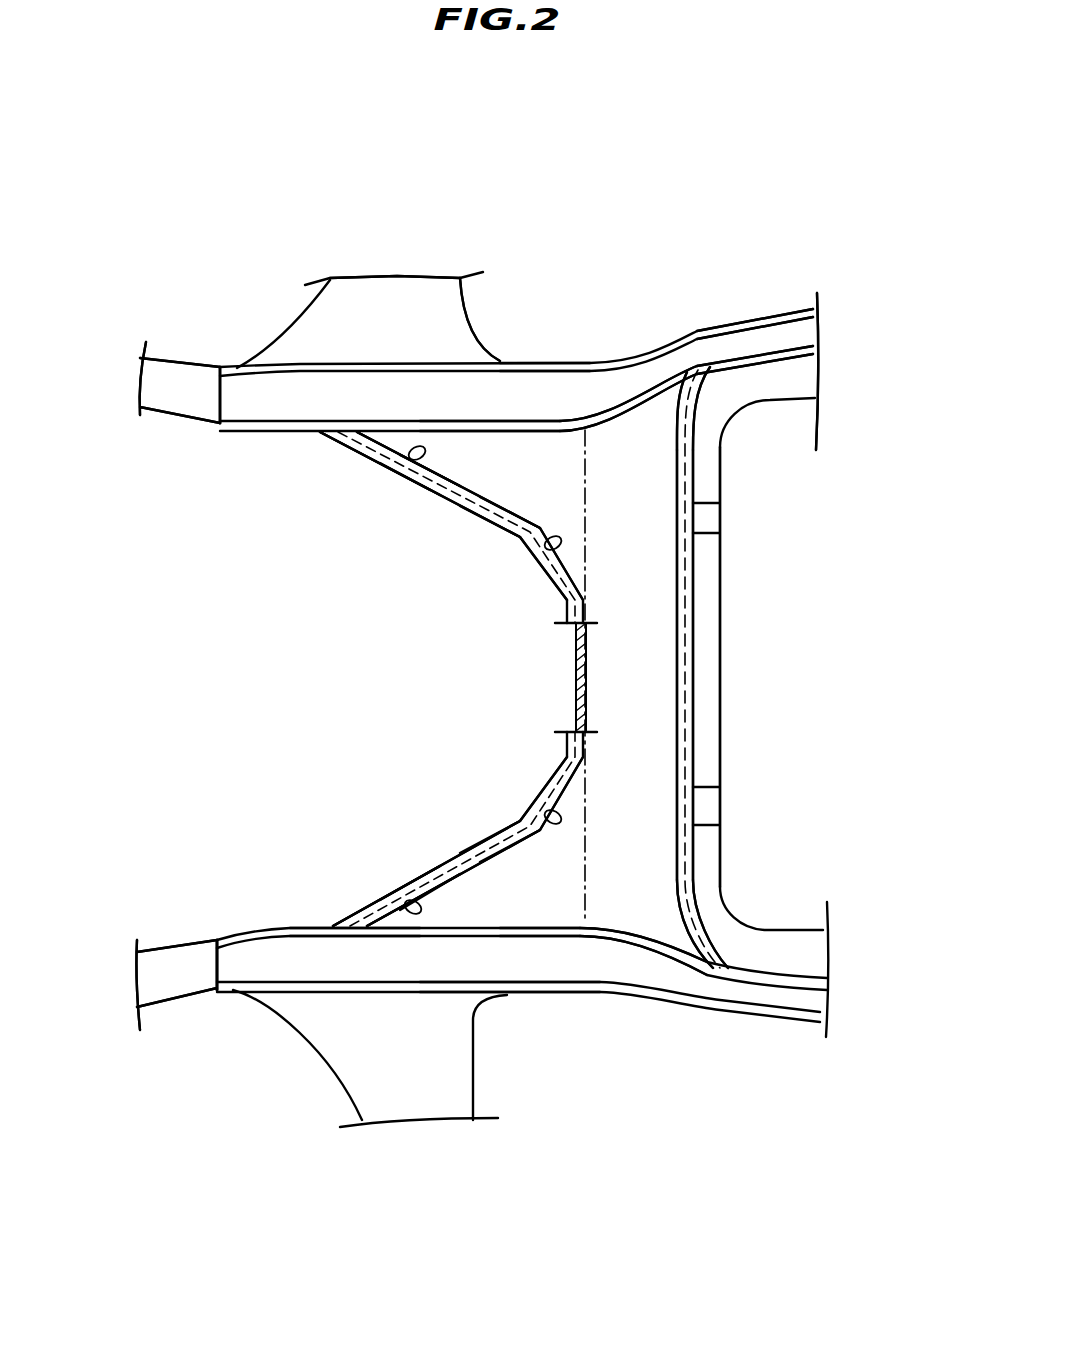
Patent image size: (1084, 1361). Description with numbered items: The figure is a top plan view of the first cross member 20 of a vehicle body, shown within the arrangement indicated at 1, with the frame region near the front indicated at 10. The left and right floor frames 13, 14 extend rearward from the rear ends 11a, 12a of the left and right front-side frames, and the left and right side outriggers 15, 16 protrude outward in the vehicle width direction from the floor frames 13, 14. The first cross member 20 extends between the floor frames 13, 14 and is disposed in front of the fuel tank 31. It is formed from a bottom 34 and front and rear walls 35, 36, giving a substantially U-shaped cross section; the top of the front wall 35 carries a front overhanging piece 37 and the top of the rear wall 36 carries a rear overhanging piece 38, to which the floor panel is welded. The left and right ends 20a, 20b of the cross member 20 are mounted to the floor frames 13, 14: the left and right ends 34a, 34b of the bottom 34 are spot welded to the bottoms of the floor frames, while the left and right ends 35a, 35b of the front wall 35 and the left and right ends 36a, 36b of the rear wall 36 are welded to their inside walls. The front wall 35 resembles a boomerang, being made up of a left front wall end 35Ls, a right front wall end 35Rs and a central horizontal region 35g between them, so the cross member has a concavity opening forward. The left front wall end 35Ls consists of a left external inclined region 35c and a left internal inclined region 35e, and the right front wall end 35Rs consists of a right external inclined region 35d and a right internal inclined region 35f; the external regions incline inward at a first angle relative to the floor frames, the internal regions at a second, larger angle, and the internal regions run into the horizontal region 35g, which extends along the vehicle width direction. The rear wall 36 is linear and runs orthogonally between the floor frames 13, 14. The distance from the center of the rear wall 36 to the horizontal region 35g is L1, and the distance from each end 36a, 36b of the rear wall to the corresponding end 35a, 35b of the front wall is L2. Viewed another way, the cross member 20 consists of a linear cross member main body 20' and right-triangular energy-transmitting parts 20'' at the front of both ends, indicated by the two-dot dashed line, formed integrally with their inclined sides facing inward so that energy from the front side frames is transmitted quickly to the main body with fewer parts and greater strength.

The vehicle body frame structure 1 is at (128, 215).
The upper cross member bracket 10 is at (302, 320).
The rear end of left front-side frame 11a is at (200, 983).
The rear end of right front-side frame 12a is at (202, 368).
The left floor frame 13 is at (533, 973).
The right floor frame 14 is at (502, 387).
The left side outrigger 15 is at (410, 1125).
The right side outrigger 16 is at (432, 290).
The first cross member 20 is at (808, 667).
The cross member main body 20' is at (793, 645).
The energy-transmitting part 20'' is at (505, 733).
The left end of first cross member 20a is at (533, 890).
The right end of first cross member 20b is at (552, 433).
The fuel tank 31 is at (770, 523).
The bottom 34 is at (647, 852).
The left end of bottom 34a is at (597, 920).
The right end of bottom 34b is at (603, 445).
The front wall 35 is at (567, 677).
The left end of front wall 35a is at (397, 930).
The right end of front wall 35b is at (390, 432).
The left external inclined region 35c is at (397, 913).
The right external inclined region 35d is at (400, 458).
The left internal inclined region 35e is at (533, 817).
The right internal inclined region 35f is at (533, 540).
The horizontal region 35g is at (567, 698).
The right front wall end 35Rs is at (395, 586).
The left front wall end 35Ls is at (393, 748).
The rear wall 36 is at (690, 747).
The left end of rear wall 36a is at (693, 943).
The right end of rear wall 36b is at (672, 355).
The front overhanging piece 37 is at (363, 907).
The rear overhanging piece 38 is at (692, 895).
The distance from rear wall center to horizontal region L1 is at (683, 665).
The distance from rear wall end to front wall end L2 is at (707, 440).